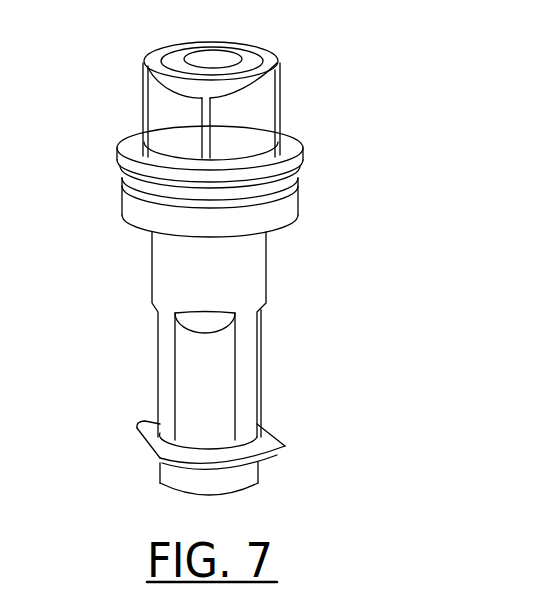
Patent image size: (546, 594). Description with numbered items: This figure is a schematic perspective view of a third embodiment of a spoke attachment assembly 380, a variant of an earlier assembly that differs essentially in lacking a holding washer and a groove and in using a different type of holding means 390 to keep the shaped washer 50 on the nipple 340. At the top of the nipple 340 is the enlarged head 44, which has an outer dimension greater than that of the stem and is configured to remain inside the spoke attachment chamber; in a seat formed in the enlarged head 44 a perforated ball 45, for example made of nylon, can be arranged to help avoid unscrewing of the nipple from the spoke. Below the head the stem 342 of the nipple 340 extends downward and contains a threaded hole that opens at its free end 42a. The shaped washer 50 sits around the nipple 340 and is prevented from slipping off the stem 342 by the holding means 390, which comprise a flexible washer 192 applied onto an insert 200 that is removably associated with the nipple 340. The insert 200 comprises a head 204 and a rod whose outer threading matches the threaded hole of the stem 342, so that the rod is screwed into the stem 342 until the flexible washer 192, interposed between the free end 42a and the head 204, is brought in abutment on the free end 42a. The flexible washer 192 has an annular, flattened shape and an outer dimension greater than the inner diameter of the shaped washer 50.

The spoke attachment assembly 380 is at (328, 73).
The enlarged head 44 is at (307, 123).
The perforated ball 45 is at (183, 62).
The nipple 340 is at (105, 183).
The shaped washer 50 is at (265, 217).
The stem 342 is at (243, 282).
The holding means 390 is at (129, 423).
The flexible washer 192 is at (136, 436).
The free end 42a is at (284, 449).
The head 204 is at (234, 482).
The insert 200 is at (162, 480).